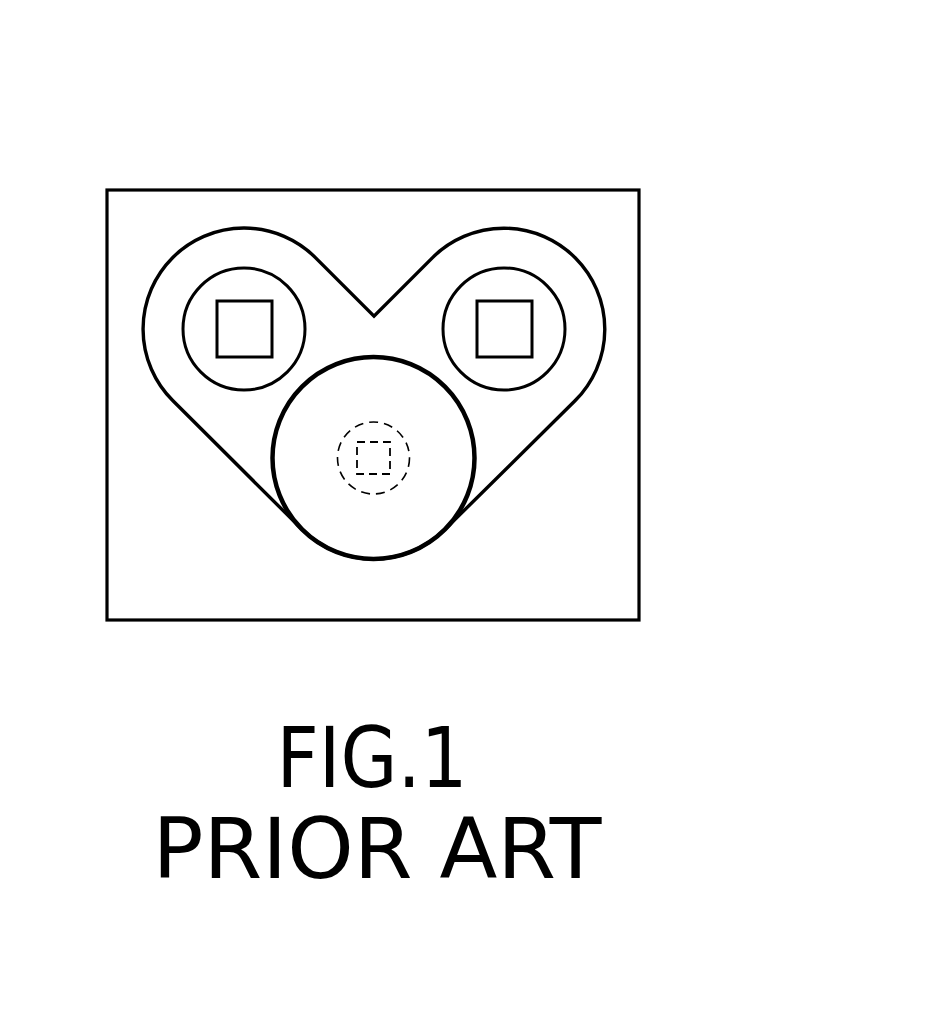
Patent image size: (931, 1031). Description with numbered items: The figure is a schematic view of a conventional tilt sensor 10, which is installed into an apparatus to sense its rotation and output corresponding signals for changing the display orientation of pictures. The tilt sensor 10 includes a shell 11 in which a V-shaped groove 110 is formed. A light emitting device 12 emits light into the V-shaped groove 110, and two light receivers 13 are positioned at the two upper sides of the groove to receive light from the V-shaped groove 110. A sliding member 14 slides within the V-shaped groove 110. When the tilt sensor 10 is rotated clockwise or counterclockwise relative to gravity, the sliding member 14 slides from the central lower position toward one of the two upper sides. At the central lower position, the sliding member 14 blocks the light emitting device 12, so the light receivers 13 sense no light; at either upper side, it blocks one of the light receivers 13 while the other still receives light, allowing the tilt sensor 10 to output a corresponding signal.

The tilt sensor 10 is at (394, 58).
The shell 11 is at (620, 477).
The V-shaped groove 110 is at (575, 253).
The light emitting device 12 is at (370, 474).
The light receivers 13 is at (245, 317).
The sliding member 14 is at (272, 457).